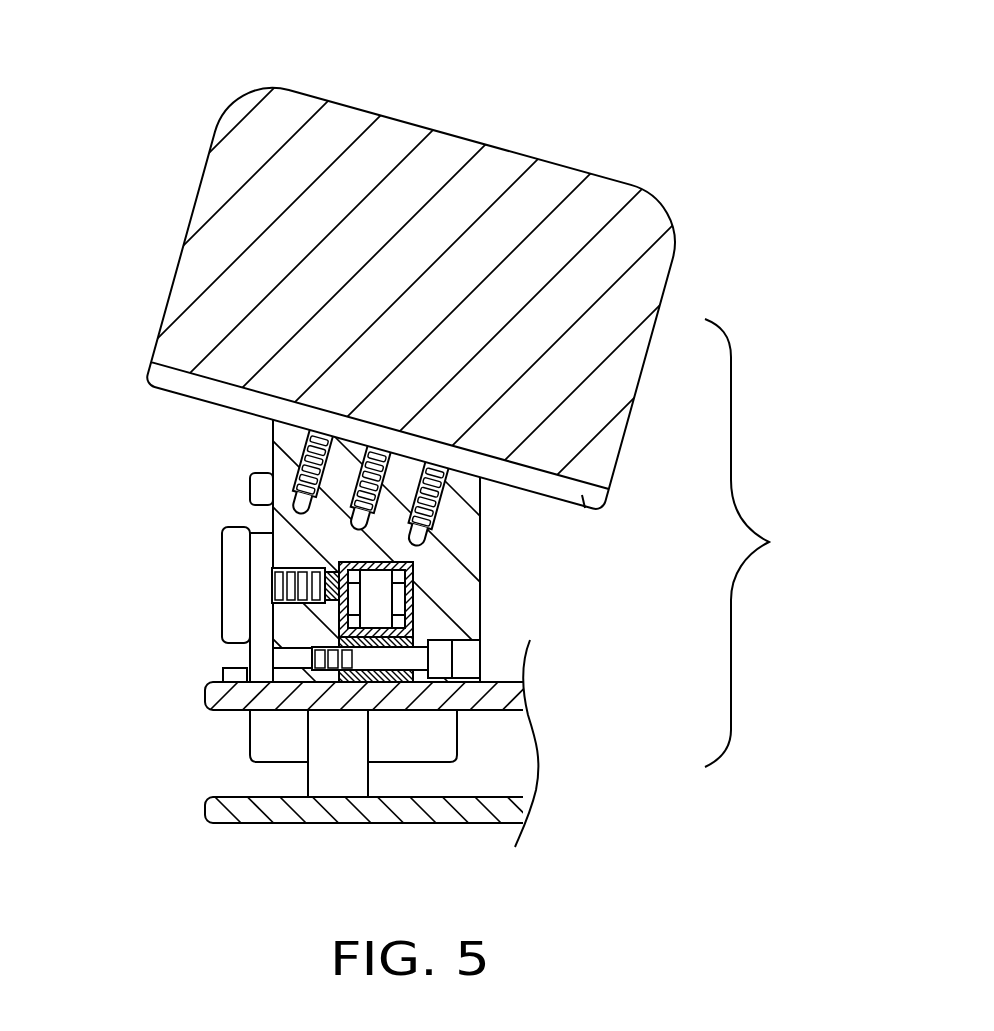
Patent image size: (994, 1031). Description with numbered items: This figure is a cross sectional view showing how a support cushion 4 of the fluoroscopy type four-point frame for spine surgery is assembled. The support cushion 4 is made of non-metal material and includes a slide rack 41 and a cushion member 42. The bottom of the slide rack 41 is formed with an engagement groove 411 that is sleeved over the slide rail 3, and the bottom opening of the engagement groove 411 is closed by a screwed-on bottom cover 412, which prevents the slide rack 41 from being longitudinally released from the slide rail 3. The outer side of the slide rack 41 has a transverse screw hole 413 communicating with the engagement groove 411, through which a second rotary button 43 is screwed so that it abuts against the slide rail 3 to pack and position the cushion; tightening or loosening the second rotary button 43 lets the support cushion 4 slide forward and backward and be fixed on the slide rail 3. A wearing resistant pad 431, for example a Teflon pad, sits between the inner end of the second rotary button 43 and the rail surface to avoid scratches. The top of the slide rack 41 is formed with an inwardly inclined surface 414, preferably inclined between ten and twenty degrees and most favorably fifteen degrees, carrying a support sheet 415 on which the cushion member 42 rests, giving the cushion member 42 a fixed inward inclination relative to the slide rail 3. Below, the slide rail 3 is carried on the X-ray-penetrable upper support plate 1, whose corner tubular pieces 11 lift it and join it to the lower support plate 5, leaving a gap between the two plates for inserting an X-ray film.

The upper support plate 1 is at (500, 700).
The tubular piece 11 is at (335, 782).
The slide rail 3 is at (414, 600).
The support cushion 4 is at (750, 543).
The slide rack 41 is at (465, 550).
The engagement groove 411 is at (300, 658).
The bottom cover 412 is at (483, 670).
The screw hole 413 is at (335, 646).
The inclined surface 414 is at (273, 440).
The support sheet 415 is at (585, 508).
The cushion member 42 is at (541, 183).
The second rotary button 43 is at (233, 585).
The wearing resistant pad 431 is at (328, 567).
The lower support plate 5 is at (512, 808).